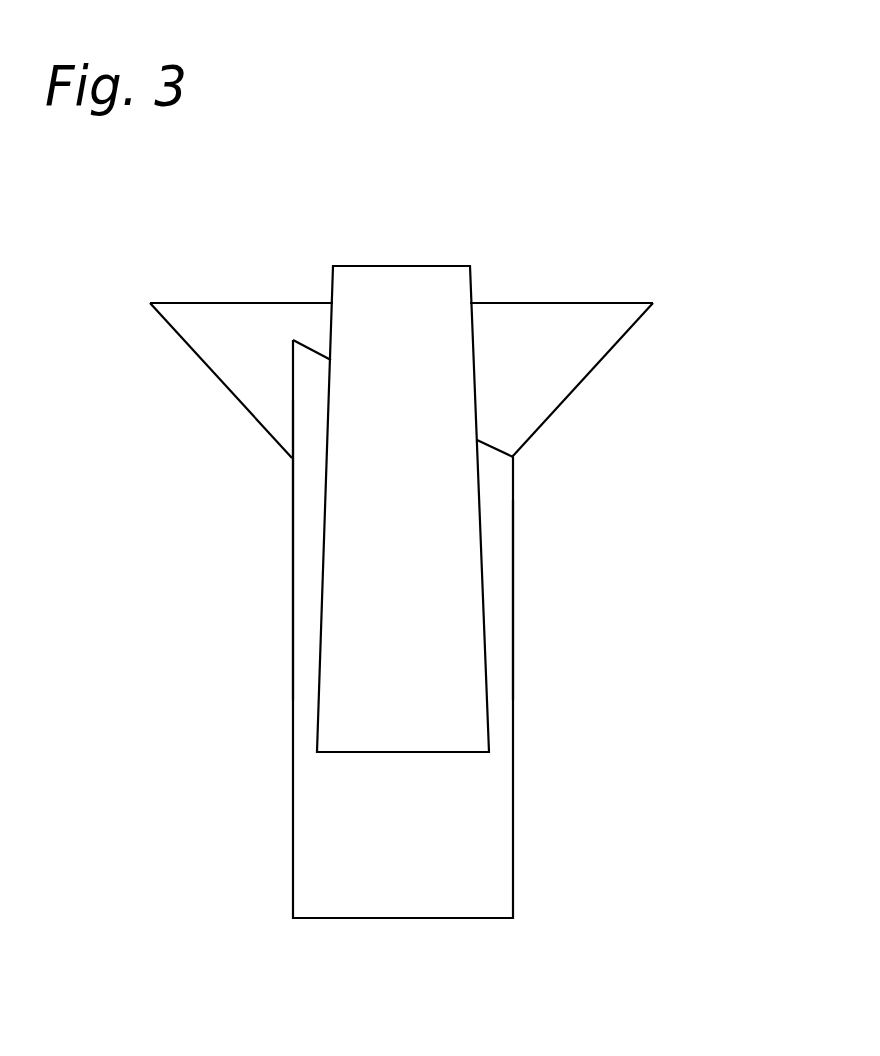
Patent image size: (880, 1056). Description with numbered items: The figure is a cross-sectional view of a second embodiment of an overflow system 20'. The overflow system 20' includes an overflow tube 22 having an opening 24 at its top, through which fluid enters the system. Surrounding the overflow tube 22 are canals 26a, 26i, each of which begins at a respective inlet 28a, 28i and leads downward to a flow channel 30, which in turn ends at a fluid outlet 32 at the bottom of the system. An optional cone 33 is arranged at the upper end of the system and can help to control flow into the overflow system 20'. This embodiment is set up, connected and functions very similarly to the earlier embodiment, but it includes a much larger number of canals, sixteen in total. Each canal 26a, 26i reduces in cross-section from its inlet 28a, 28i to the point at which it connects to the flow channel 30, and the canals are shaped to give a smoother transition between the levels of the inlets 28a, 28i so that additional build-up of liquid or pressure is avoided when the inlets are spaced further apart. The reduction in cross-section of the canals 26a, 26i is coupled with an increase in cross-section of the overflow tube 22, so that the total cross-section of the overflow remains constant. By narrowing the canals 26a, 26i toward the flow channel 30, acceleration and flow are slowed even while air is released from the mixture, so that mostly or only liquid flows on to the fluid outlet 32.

The overflow system 20' is at (651, 174).
The overflow tube 22 is at (467, 335).
The opening 24 is at (412, 260).
The canal 26a is at (303, 581).
The canal 26i is at (493, 602).
The inlet 28a is at (318, 368).
The inlet 28i is at (488, 463).
The flow channel 30 is at (473, 822).
The fluid outlet 32 is at (412, 933).
The cone 33 is at (641, 315).